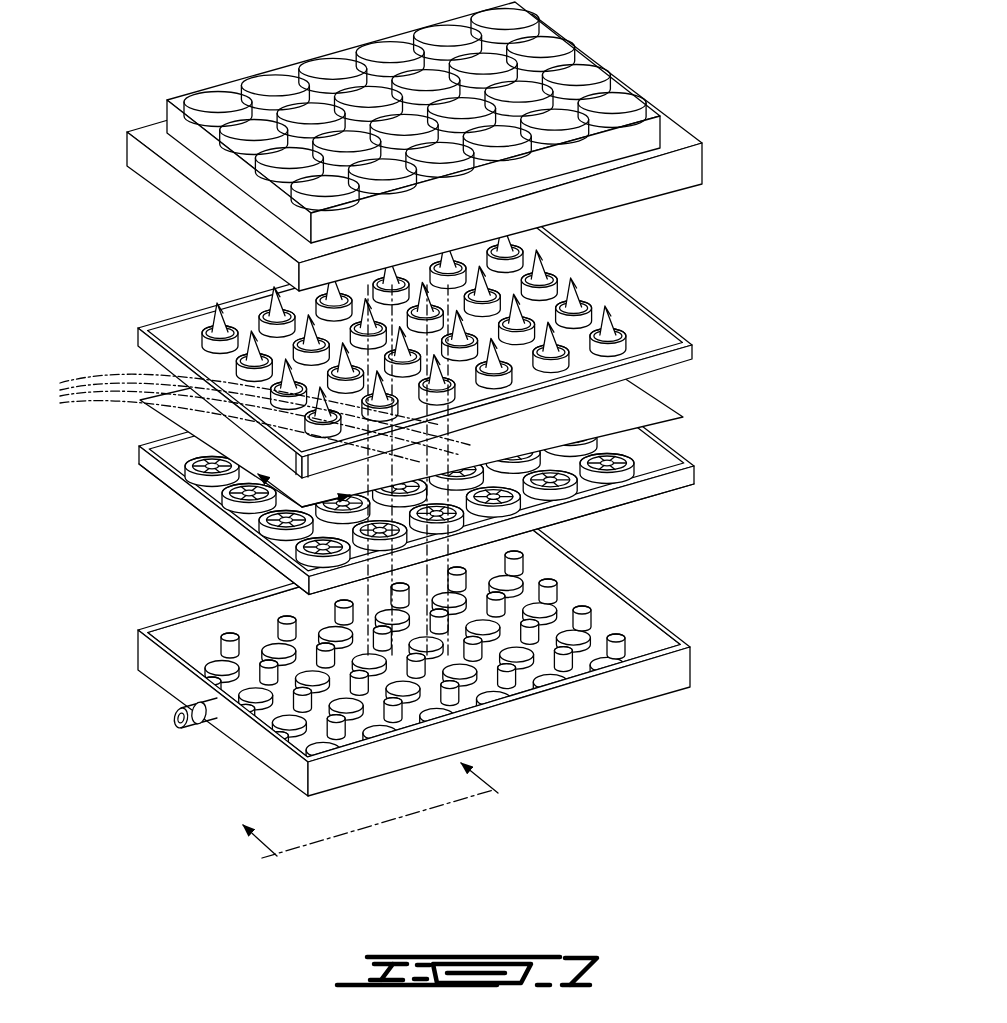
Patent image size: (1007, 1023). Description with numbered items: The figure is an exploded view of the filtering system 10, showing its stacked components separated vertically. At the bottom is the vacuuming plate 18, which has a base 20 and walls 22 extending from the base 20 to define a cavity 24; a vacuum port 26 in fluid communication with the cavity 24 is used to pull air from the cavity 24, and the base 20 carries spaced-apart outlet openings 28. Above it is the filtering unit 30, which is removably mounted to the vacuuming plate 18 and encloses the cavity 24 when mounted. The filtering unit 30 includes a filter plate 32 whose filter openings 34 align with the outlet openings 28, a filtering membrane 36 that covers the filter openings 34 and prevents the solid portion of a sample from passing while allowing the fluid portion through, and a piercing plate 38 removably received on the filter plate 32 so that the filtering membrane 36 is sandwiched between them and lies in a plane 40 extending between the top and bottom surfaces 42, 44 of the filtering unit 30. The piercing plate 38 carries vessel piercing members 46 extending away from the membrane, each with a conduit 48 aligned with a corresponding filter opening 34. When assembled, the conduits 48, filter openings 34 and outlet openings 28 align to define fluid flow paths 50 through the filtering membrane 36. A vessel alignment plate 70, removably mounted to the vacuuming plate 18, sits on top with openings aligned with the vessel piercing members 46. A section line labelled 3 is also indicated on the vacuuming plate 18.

The filtering system 10 is at (797, 112).
The vacuuming plate 18 is at (694, 658).
The base 20 is at (597, 626).
The walls 22 is at (143, 662).
The cavity 24 is at (565, 605).
The vacuum port 26 is at (177, 722).
The outlet openings 28 is at (463, 673).
The filtering unit 30 is at (750, 386).
The filter plate 32 is at (698, 470).
The filter openings 34 is at (500, 488).
The filtering membrane 36 is at (654, 394).
The piercing plate 38 is at (688, 318).
The plane 40 is at (276, 504).
The top surface 42 is at (176, 335).
The bottom surface 44 is at (174, 493).
The vessel piercing members 46 is at (489, 330).
The conduit 48 is at (500, 353).
The fluid flow paths 50 is at (249, 418).
The vessel alignment plate 70 is at (676, 111).
The section line 3- 3 is at (379, 825).